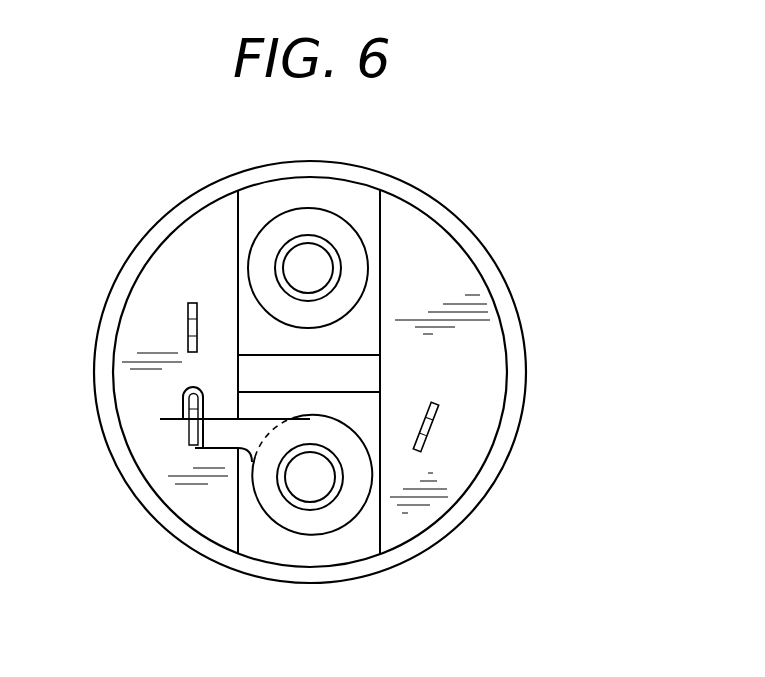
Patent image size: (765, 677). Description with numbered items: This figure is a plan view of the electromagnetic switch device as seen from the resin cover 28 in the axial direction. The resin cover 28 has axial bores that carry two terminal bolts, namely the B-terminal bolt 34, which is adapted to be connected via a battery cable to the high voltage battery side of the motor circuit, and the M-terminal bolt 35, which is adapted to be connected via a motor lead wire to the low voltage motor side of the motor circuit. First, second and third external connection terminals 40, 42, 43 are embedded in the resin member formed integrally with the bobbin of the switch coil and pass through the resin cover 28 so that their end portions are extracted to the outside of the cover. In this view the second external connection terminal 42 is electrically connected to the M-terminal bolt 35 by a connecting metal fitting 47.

The resin cover 28 is at (445, 270).
The B-terminal bolt 34 is at (313, 260).
The M-terminal bolt 35 is at (317, 488).
The first external connection terminal 40 is at (428, 427).
The second external connection terminal 42 is at (160, 419).
The third external connection terminal 43 is at (187, 330).
The connecting metal fitting 47 is at (267, 495).